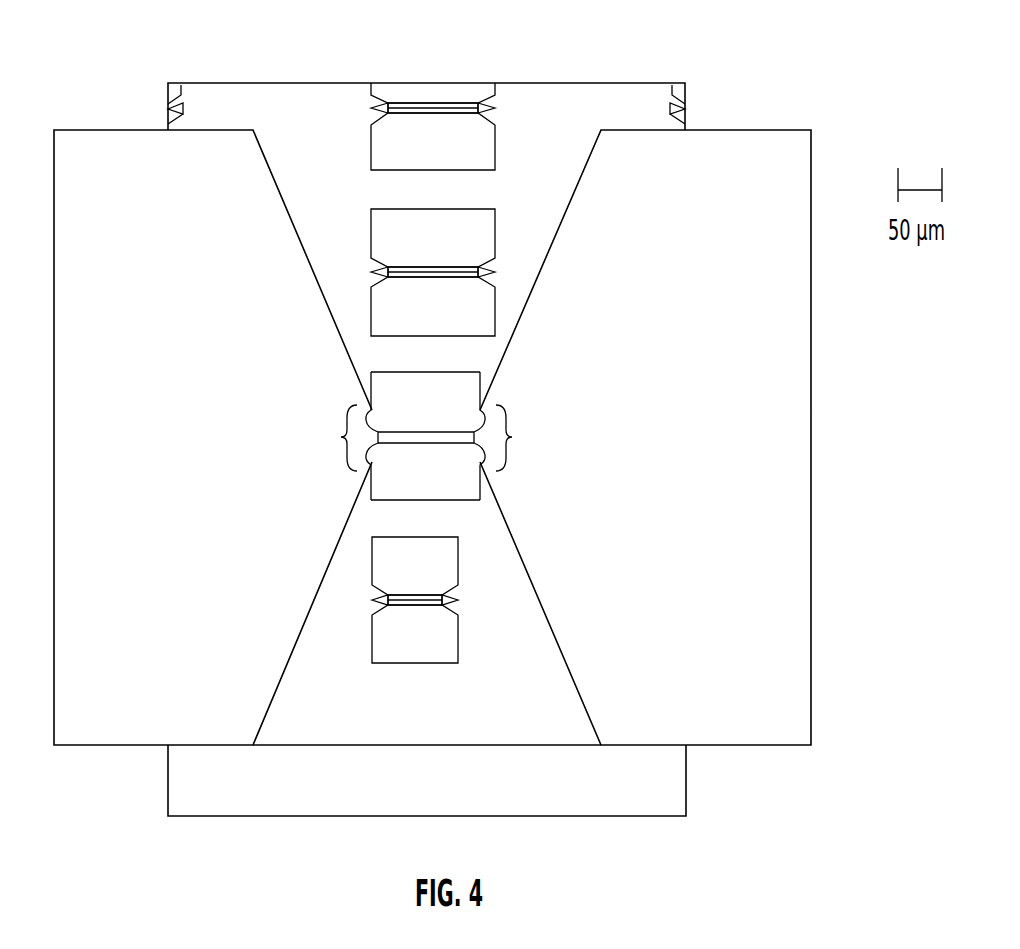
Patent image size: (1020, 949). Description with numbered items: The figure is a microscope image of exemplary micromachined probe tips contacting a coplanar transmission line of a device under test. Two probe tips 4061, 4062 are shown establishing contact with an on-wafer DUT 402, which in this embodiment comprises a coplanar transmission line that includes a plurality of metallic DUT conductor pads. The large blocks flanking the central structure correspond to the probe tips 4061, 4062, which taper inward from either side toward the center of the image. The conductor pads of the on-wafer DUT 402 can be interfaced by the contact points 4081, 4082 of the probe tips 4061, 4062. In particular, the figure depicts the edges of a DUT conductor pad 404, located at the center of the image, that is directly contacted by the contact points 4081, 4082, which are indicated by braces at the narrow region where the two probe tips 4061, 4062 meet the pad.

The on-wafer DUT 402 is at (555, 83).
The DUT conductor pad 404 is at (460, 502).
The probe tip 4061 is at (117, 746).
The probe tip 4062 is at (752, 746).
The contact point 4081 is at (326, 438).
The contact point 4082 is at (530, 438).